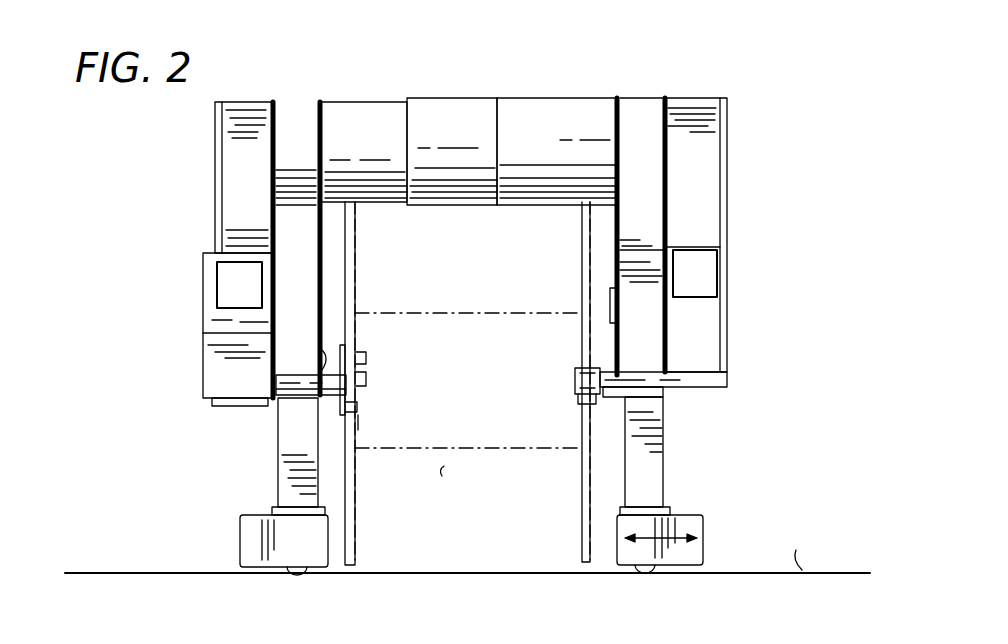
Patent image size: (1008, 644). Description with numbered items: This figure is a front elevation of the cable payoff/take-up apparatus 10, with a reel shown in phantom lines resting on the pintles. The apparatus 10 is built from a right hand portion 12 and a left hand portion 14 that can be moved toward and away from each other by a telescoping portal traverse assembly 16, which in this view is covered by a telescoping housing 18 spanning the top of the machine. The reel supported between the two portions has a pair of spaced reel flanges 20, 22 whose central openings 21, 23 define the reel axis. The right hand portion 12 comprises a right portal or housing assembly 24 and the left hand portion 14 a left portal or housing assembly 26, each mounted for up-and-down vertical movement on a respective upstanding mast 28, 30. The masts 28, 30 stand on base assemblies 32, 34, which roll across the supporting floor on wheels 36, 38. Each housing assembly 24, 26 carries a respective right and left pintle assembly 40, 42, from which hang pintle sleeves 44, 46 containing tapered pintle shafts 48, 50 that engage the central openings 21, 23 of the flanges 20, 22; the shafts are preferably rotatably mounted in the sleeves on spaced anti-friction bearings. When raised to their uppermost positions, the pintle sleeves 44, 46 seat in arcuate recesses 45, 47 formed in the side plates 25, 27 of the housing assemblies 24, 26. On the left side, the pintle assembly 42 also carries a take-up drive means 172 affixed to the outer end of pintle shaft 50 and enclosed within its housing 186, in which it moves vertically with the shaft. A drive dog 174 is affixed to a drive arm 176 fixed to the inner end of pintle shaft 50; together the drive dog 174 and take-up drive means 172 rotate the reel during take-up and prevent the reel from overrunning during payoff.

The cable payoff/take-up apparatus 10 is at (770, 110).
The right hand portion 12 is at (748, 228).
The left hand portion 14 is at (168, 234).
The telescoping portal traverse assembly 16 is at (419, 64).
The telescoping housing 18 is at (453, 100).
The reel flange 20 is at (560, 250).
The central opening 21 is at (580, 374).
The reel flange 22 is at (355, 255).
The central opening 23 is at (374, 372).
The right portal or housing assembly 24 is at (655, 186).
The side plate 25 is at (610, 106).
The left portal or housing assembly 26 is at (275, 186).
The side plate 27 is at (274, 106).
The upstanding mast 28 is at (650, 454).
The upstanding mast 30 is at (280, 465).
The base assembly 32 is at (701, 532).
The base assembly 34 is at (246, 532).
The wheel 36 is at (652, 576).
The wheel 38 is at (305, 578).
The right pintle assembly 40 is at (718, 390).
The left pintle assembly 42 is at (232, 422).
The pintle sleeve 44 is at (658, 374).
The arcuate recess 45 is at (610, 354).
The pintle sleeve 46 is at (276, 386).
The arcuate recess 47 is at (325, 362).
The tapered pintle shaft 48 is at (574, 390).
The tapered pintle shaft 50 is at (366, 384).
The take-up drive means 172 is at (170, 360).
The drive dog 174 is at (356, 352).
The drive arm 176 is at (358, 422).
The housing 186 is at (220, 328).